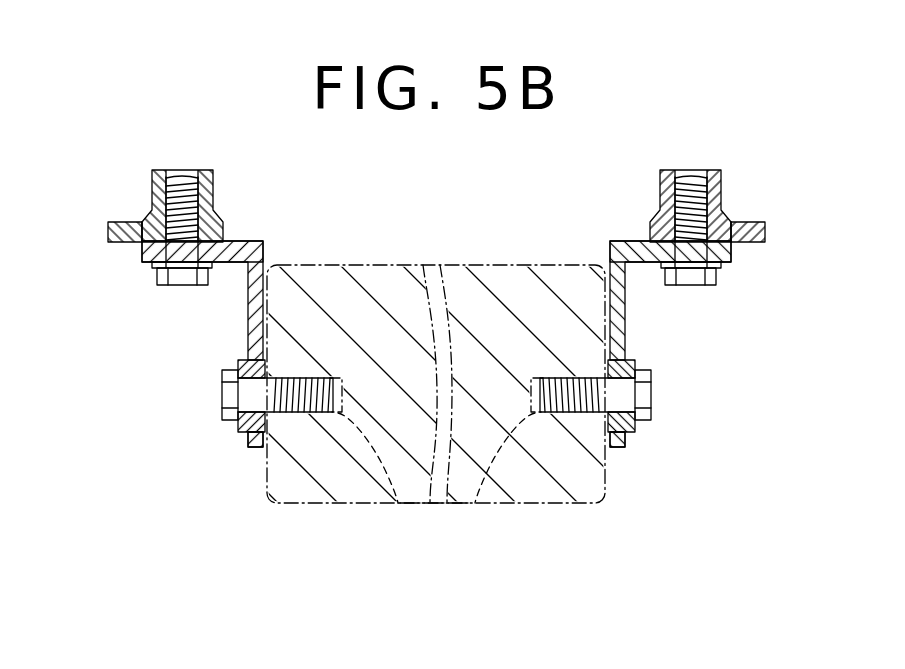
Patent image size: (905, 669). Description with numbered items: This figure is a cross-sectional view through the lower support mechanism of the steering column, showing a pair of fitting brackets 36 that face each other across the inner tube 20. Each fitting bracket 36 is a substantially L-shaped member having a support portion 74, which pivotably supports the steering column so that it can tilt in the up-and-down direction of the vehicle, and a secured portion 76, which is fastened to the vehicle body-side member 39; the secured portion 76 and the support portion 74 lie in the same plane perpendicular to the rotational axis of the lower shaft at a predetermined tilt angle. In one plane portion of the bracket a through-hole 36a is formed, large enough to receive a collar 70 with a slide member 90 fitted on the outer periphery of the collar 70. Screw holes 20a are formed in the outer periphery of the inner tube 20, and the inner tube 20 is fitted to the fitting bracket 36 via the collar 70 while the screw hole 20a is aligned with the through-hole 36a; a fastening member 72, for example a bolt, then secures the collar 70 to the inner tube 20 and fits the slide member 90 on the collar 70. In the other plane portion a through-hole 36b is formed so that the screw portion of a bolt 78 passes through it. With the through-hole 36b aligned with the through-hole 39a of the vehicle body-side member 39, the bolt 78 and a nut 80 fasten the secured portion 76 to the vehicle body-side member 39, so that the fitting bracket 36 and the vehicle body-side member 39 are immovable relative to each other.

The inner tube 20 is at (350, 265).
The screw hole 20a is at (412, 503).
The fitting bracket 36 is at (264, 242).
The through-hole 36a is at (263, 423).
The through-hole 36b is at (142, 262).
The vehicle body-side member 39 is at (112, 223).
The through-hole 39a is at (212, 214).
The collar 70 is at (237, 421).
The fastening member 72 is at (222, 394).
The support portion 74 is at (214, 369).
The secured portion 76 is at (134, 283).
The bolt 78 is at (187, 287).
The nut 80 is at (152, 185).
The slide member 90 is at (248, 358).